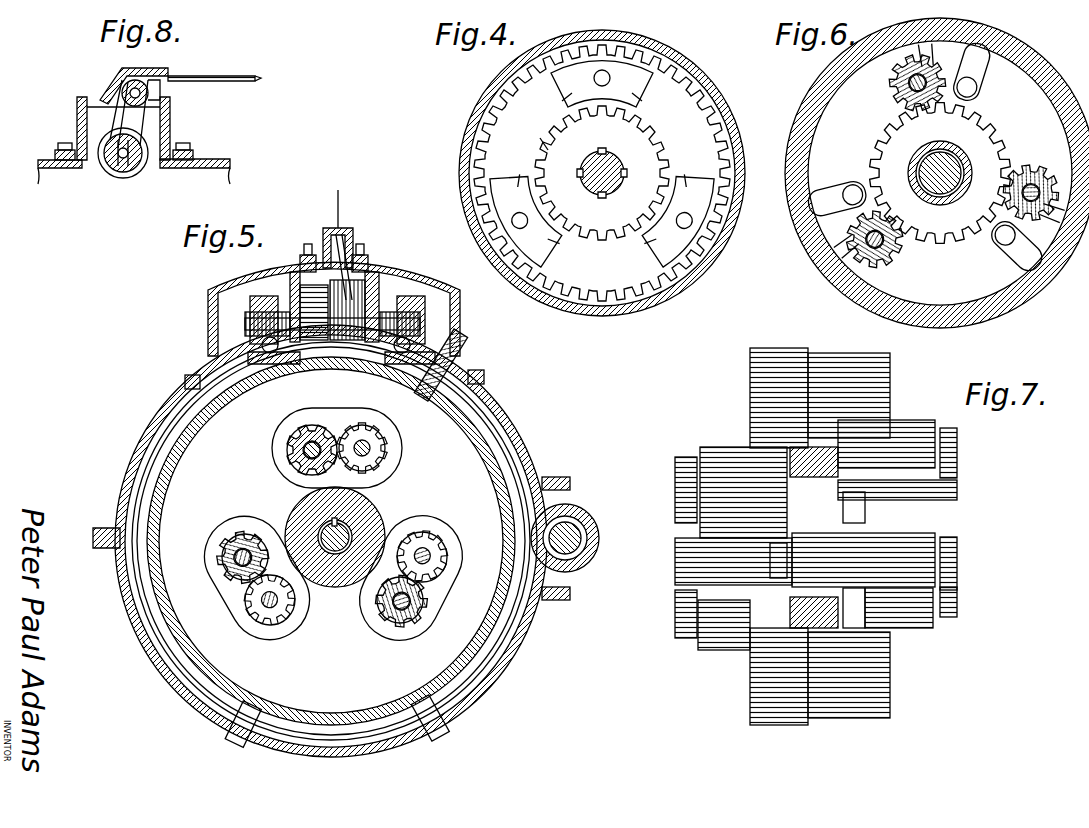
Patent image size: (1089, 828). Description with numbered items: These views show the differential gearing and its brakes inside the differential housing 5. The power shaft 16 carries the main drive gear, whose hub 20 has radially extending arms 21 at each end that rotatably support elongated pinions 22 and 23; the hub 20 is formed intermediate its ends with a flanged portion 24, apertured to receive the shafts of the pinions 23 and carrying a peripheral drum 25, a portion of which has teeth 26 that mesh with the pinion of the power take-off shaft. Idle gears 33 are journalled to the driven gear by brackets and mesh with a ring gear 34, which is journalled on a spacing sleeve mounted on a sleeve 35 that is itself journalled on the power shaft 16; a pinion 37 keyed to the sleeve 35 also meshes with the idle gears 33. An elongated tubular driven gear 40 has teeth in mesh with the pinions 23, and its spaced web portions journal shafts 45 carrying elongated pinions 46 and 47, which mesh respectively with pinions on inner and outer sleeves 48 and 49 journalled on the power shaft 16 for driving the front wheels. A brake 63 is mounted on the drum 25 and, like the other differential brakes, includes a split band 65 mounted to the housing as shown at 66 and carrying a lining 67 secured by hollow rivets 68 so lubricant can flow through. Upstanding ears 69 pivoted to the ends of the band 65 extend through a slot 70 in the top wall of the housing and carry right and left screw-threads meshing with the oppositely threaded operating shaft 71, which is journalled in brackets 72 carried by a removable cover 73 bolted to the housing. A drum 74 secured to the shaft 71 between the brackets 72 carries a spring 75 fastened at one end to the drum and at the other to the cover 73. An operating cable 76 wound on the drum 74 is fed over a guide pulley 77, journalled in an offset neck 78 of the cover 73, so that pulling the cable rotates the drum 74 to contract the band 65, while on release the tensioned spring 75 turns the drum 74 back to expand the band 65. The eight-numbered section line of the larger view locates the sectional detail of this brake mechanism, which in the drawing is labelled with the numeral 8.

In FIG. 8, the differential housing 5 is at (216, 160).
In FIG. 5, the differential housing 5 is at (178, 372).
In FIG. 5, the spindle housing 8 is at (338, 380).
In FIG. 5, the power shaft 16 is at (318, 530).
In FIG. 4, the power shaft 16 is at (598, 195).
In FIG. 6, the power shaft 16 is at (940, 190).
In FIG. 5, the hub 20 is at (375, 510).
In FIG. 7, the radially extending arms 21 is at (678, 468).
In FIG. 5, the elongated pinions 22 is at (372, 445).
In FIG. 7, the elongated pinions 22 is at (712, 528).
In FIG. 5, the elongated pinions 23 is at (288, 455).
In FIG. 7, the elongated pinions 23 is at (920, 430).
In FIG. 5, the flanged portion 24 is at (333, 531).
In FIG. 7, the flanged portion 24 is at (830, 448).
In FIG. 5, the drum 25 is at (500, 480).
In FIG. 7, the drum 25 is at (888, 370).
In FIG. 7, the teeth 26 is at (793, 356).
In FIG. 4, the idle gears 33 is at (620, 68).
In FIG. 4, the ring gear 34 is at (710, 112).
In FIG. 4, the sleeve 35 is at (606, 158).
In FIG. 4, the pinion 37 is at (529, 136).
In FIG. 6, the tubular driven gear 40 is at (1050, 62).
In FIG. 6, the shafts 45 is at (845, 205).
In FIG. 6, the elongated pinions 46 is at (892, 92).
In FIG. 6, the elongated pinions 47 is at (978, 90).
In FIG. 6, the inner sleeve 48 is at (945, 150).
In FIG. 6, the outer sleeve 49 is at (955, 188).
In FIG. 5, the brake 63 is at (492, 418).
In FIG. 5, the band 65 is at (510, 437).
In FIG. 5, the band mounting 66 is at (250, 732).
In FIG. 5, the lining 67 is at (470, 665).
In FIG. 5, the hollow rivets 68 is at (152, 458).
In FIG. 5, the upstanding ears 69 is at (265, 296).
In FIG. 8, the slot 70 is at (95, 165).
In FIG. 5, the slot 70 is at (440, 345).
In FIG. 5, the operating shaft 71 is at (388, 318).
In FIG. 5, the brackets 72 is at (268, 312).
In FIG. 8, the removable cover 73 is at (77, 120).
In FIG. 5, the removable cover 73 is at (462, 310).
In FIG. 8, the drum 74 is at (120, 170).
In FIG. 5, the drum 74 is at (368, 345).
In FIG. 8, the spring 75 is at (150, 120).
In FIG. 5, the spring 75 is at (312, 300).
In FIG. 8, the operating cable 76 is at (214, 65).
In FIG. 5, the operating cable 76 is at (350, 280).
In FIG. 8, the guide pulley 77 is at (118, 82).
In FIG. 5, the guide pulley 77 is at (345, 232).
In FIG. 8, the offset neck 78 is at (165, 68).